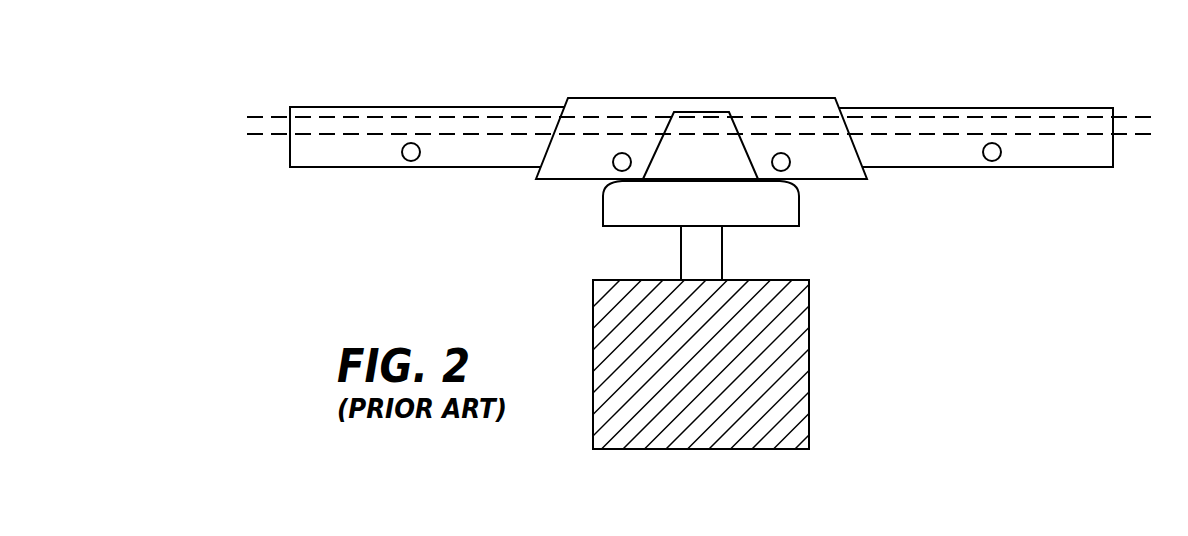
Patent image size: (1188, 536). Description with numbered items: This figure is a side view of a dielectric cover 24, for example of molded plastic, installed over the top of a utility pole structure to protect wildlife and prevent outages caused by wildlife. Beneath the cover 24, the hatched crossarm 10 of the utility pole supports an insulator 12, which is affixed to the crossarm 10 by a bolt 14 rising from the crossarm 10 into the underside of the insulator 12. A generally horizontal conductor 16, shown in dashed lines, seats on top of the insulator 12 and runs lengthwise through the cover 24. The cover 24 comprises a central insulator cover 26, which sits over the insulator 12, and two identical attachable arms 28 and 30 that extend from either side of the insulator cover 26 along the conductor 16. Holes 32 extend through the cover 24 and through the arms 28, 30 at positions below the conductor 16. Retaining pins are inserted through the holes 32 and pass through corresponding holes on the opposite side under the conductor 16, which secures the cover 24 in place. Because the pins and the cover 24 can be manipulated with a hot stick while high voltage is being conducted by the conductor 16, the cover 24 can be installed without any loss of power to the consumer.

The crossarm 10 is at (809, 378).
The insulator 12 is at (805, 210).
The bolt 14 is at (681, 268).
The conductor 16 is at (262, 117).
The dielectric cover 24 is at (868, 50).
The insulator cover 26 is at (760, 98).
The attachable arm 28 is at (1057, 108).
The attachable arm 30 is at (467, 107).
The holes 32 is at (411, 161).